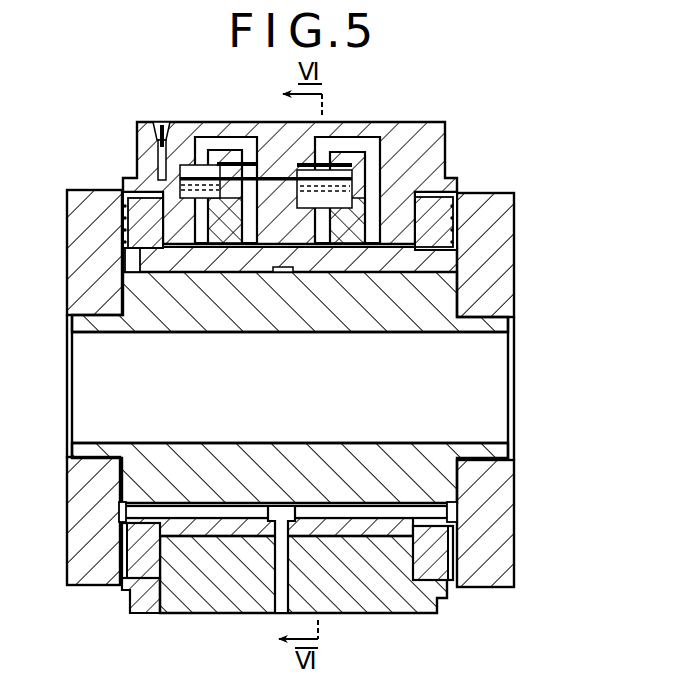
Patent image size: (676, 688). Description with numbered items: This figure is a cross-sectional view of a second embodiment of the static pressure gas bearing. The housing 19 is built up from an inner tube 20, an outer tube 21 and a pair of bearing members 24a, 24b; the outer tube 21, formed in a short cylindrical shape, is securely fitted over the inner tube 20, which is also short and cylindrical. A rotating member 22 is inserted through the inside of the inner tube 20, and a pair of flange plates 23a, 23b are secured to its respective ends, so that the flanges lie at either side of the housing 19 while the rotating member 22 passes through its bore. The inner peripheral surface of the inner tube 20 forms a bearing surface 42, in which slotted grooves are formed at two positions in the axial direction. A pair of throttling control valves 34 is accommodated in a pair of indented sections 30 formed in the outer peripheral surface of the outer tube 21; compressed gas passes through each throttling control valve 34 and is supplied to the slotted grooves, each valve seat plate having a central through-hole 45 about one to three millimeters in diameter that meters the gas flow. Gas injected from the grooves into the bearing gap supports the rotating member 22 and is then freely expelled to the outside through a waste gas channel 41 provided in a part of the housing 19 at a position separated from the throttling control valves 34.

The housing 19 is at (450, 259).
The inner tube 20 is at (365, 535).
The outer tube 21 is at (405, 604).
The rotating member 22 is at (235, 495).
The flange plate 23a is at (95, 578).
The flange plate 23b is at (507, 545).
The bearing member 24a is at (143, 579).
The bearing member 24b is at (432, 580).
The indented section 30 is at (217, 170).
The throttling control valve 34 is at (180, 178).
The waste gas channel 41 is at (284, 613).
The bearing surface 42 is at (397, 498).
The through-hole 45 is at (290, 126).